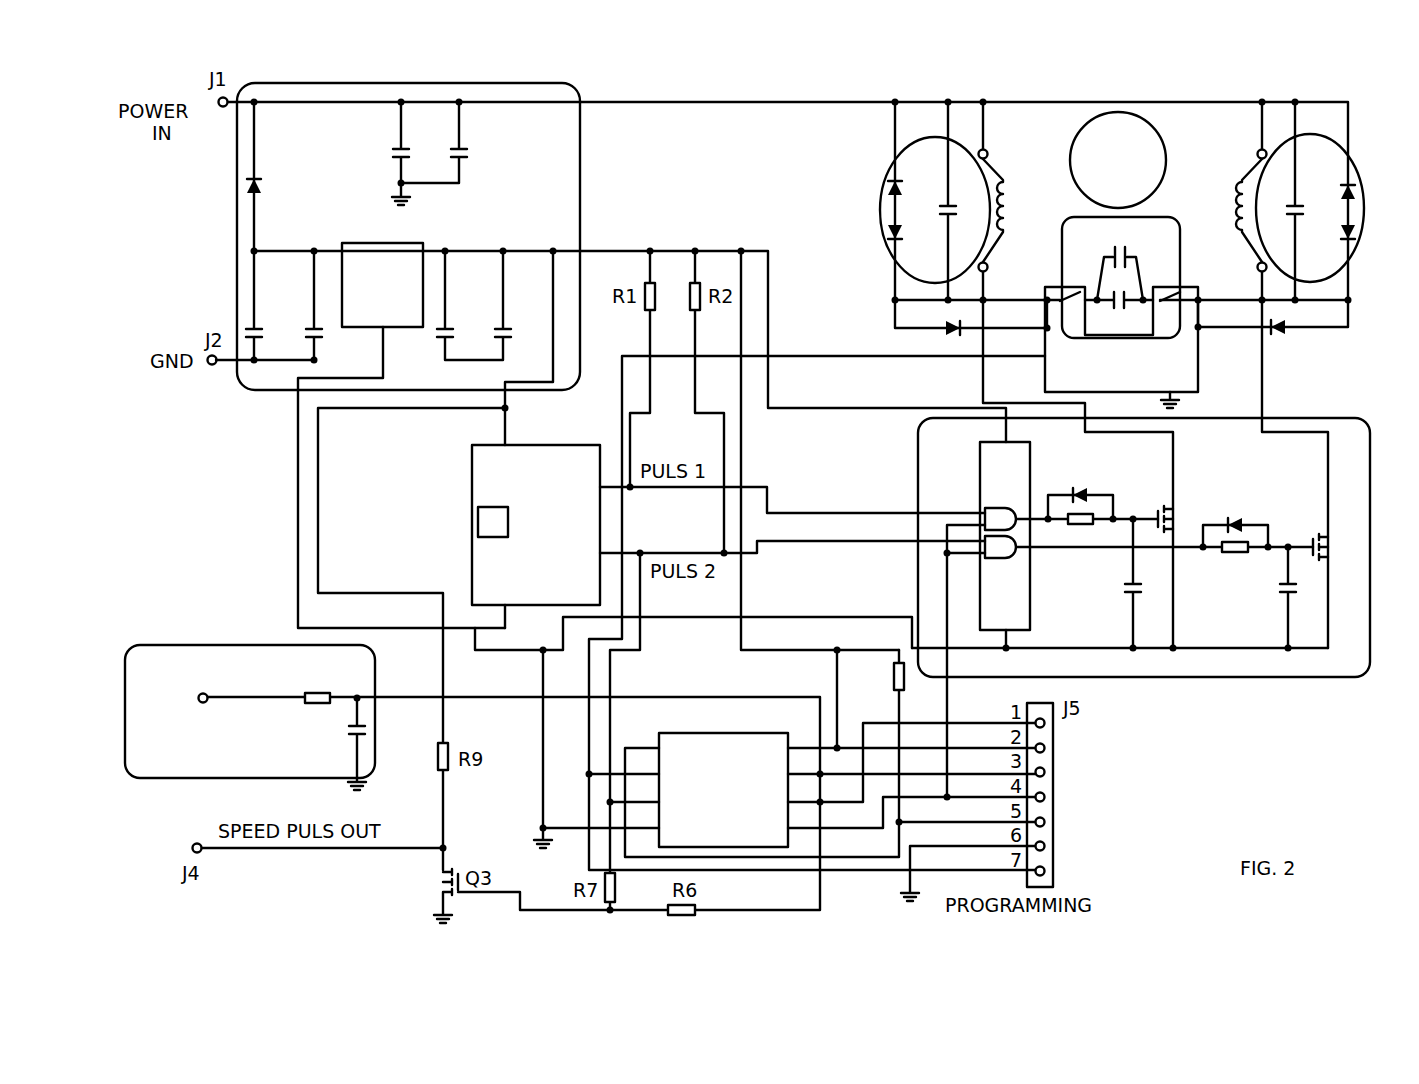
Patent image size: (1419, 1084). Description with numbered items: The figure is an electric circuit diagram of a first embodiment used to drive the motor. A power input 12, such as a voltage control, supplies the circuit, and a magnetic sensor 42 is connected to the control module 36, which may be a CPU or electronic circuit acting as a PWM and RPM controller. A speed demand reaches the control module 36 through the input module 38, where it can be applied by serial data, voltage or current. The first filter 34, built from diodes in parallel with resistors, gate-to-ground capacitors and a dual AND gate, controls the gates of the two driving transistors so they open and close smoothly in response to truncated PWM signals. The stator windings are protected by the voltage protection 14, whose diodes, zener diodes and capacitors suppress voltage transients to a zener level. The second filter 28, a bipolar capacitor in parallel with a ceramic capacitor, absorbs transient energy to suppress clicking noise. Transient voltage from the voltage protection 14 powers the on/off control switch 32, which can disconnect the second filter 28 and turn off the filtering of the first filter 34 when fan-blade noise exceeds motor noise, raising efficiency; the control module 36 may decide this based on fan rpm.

The power input 12 is at (272, 390).
The voltage protection 14 is at (890, 178).
The second filter 28 is at (1180, 325).
The on/off control switch 32 is at (1045, 372).
The first filter 34 is at (1197, 677).
The PWM and RPM control module 36 is at (755, 845).
The input module 38 is at (222, 645).
The magnetic sensor 42 is at (470, 452).